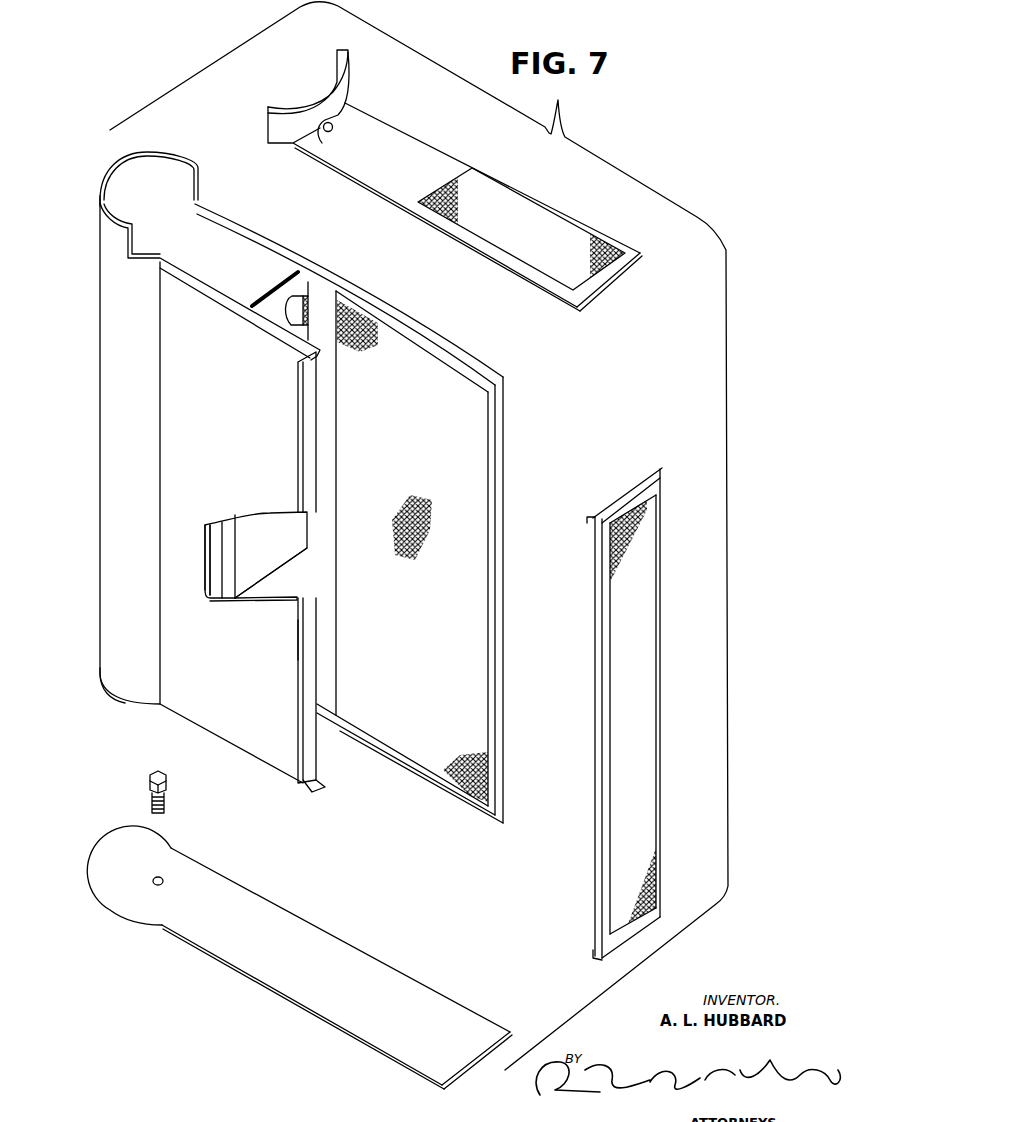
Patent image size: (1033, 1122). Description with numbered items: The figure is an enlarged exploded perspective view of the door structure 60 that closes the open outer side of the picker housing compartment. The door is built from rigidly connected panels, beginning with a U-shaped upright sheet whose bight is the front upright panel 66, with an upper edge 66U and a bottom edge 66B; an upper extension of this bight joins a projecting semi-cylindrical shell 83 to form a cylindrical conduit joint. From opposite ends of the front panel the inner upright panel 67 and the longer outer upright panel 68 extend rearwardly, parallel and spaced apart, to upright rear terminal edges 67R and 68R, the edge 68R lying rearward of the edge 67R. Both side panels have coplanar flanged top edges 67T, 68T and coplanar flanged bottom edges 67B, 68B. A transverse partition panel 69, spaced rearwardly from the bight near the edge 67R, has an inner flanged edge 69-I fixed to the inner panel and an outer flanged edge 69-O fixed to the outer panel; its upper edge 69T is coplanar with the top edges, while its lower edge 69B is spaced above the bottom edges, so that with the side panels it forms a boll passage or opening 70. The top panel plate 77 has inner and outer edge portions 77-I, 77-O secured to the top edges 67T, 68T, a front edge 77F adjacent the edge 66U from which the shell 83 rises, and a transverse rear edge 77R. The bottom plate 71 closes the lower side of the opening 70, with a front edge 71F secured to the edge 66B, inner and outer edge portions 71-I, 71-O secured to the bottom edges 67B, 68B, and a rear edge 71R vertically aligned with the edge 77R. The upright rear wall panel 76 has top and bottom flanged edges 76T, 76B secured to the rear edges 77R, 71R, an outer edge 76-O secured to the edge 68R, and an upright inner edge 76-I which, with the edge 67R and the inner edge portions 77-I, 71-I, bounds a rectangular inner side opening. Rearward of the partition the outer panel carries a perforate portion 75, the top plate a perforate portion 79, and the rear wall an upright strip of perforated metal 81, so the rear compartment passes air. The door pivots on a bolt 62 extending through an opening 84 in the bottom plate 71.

The door structure 60 is at (108, 151).
The bolt 62 is at (170, 780).
The front upright panel 66 is at (158, 223).
The upper edge of front panel 66U is at (100, 200).
The bottom edge of front panel 66B is at (100, 676).
The inner upright panel 67 is at (237, 501).
The flanged top edge of inner panel 67T is at (180, 271).
The rear terminal edge of inner panel 67R is at (296, 405).
The flanged bottom edge of inner panel 67B is at (325, 787).
The outer upright panel 68 is at (377, 513).
The flanged top edge of outer panel 68T is at (257, 241).
The rear terminal edge of outer panel 68R is at (502, 434).
The flanged bottom edge of outer panel 68B is at (443, 789).
The transverse partition panel 69 is at (252, 556).
The outer flanged edge of partition panel 69-O is at (306, 300).
The upper edge of partition panel 69T is at (275, 296).
The inner flanged edge of partition panel 69-I is at (199, 560).
The lower edge of partition panel 69B is at (274, 574).
The boll passage 70 is at (322, 668).
The bottom plate 71 is at (297, 961).
The front edge of bottom plate 71F is at (112, 866).
The outer edge portion of bottom plate 71-O is at (298, 907).
The inner edge portion of bottom plate 71-I is at (287, 1000).
The rear edge of bottom plate 71R is at (467, 1075).
The perforate portion of outer panel 75 is at (439, 376).
The rear wall panel 76 is at (624, 715).
The outer edge of rear wall panel 76-O is at (663, 471).
The top flanged edge of rear wall panel 76T is at (589, 517).
The inner edge of rear wall panel 76-I is at (597, 699).
The bottom flanged edge of rear wall panel 76B is at (593, 960).
The top panel plate 77 is at (474, 201).
The outer edge portion of top plate 77-O is at (397, 113).
The inner edge portion of top plate 77-I is at (355, 180).
The front edge of top plate 77F is at (313, 156).
The rear edge of top plate 77R is at (613, 282).
The perforate portion of top plate 79 is at (507, 200).
The perforated metal strip 81 is at (650, 643).
The semi-cylindrical shell 83 is at (344, 92).
The opening in bottom plate 84 is at (164, 881).